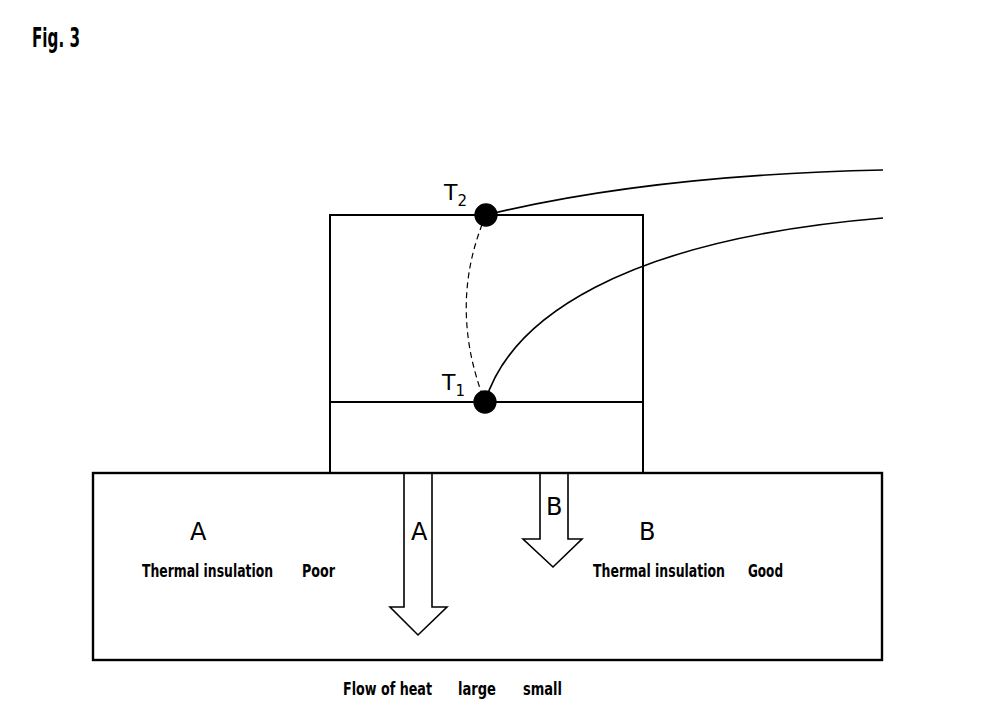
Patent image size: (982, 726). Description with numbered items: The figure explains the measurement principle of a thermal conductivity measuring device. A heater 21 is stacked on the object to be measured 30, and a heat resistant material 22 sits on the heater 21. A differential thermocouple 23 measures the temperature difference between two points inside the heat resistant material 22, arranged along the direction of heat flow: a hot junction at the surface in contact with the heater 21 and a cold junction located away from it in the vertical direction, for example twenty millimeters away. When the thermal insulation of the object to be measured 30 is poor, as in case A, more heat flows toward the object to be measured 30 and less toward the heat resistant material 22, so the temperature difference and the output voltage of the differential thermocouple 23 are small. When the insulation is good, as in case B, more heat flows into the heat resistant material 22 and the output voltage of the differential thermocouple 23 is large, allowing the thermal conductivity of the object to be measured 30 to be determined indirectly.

The heater 21 is at (644, 431).
The heat resistant material 22 is at (644, 320).
The differential thermocouple 23 is at (765, 173).
The object to be measured 30 is at (882, 513).